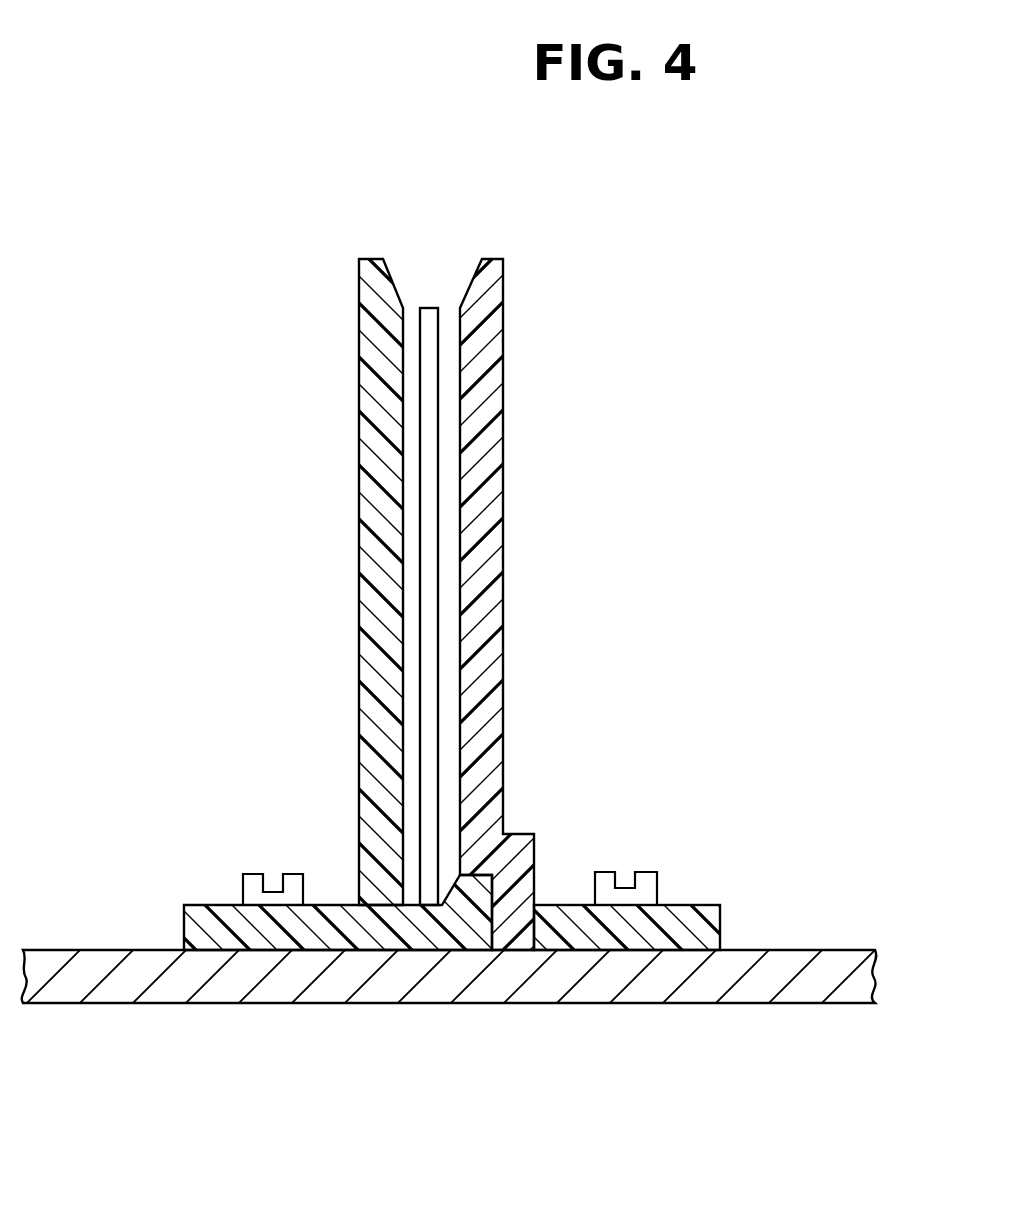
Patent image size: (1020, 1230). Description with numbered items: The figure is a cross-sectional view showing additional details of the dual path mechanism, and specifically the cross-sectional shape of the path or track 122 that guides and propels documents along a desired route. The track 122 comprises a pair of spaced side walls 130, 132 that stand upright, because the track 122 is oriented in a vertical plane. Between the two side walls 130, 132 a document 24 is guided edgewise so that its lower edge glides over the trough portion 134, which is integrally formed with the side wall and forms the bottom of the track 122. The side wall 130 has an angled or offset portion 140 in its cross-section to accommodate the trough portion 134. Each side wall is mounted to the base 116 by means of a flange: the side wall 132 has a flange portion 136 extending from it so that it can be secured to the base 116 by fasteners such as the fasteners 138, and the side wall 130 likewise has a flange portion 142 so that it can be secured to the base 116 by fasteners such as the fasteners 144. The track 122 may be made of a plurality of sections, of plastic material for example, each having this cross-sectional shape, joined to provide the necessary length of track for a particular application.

The document 24 is at (427, 306).
The base 116 is at (220, 988).
The path 122 is at (352, 343).
The side wall 130 is at (503, 526).
The side wall 132 is at (359, 548).
The trough portion 134 is at (475, 893).
The flange portion 136 is at (184, 906).
The fasteners 138 is at (245, 873).
The angled or offset portion 140 is at (525, 845).
The flange portion 142 is at (720, 904).
The fasteners 144 is at (657, 872).